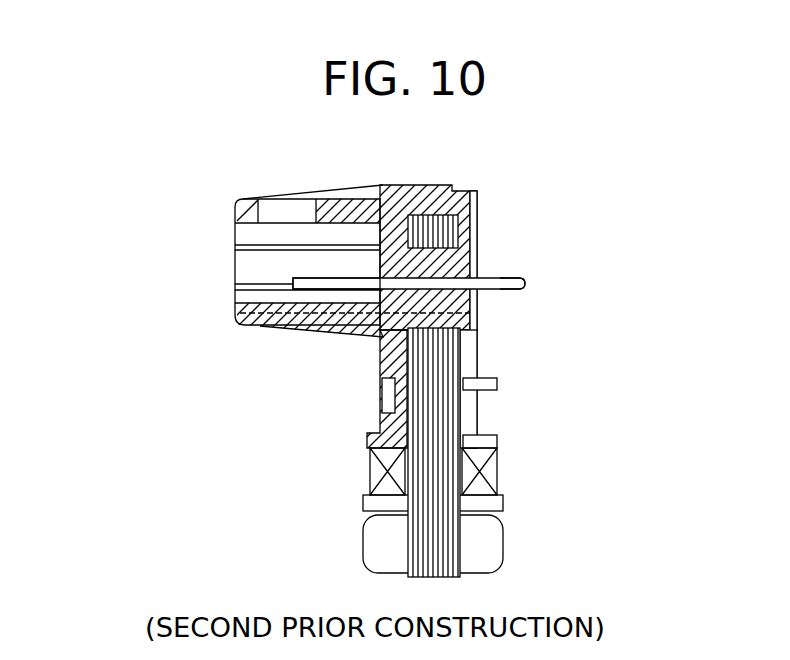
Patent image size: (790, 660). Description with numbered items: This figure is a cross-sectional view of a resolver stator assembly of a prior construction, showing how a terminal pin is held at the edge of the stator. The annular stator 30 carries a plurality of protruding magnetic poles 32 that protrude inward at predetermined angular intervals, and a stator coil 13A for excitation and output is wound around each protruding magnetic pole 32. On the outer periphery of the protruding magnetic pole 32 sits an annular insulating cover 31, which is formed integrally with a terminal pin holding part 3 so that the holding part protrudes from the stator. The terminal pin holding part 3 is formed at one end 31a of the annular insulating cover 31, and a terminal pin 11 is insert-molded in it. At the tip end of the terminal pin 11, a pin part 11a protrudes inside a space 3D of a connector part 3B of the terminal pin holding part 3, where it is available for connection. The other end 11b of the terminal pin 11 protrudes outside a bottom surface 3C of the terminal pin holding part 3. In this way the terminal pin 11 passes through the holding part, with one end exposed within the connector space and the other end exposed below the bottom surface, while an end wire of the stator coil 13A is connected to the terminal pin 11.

The terminal pin holding part 3 is at (472, 221).
The connector part 3B is at (393, 208).
The bottom surface 3C is at (478, 306).
The space 3D is at (256, 268).
The terminal pin 11 is at (492, 277).
The pin part 11a is at (321, 278).
The other end 11b is at (512, 289).
The stator coil 13A is at (497, 463).
The annular stator 30 is at (442, 423).
The annular insulating cover 31 is at (372, 548).
The one end 31a is at (378, 335).
The protruding magnetic pole 32 is at (478, 540).